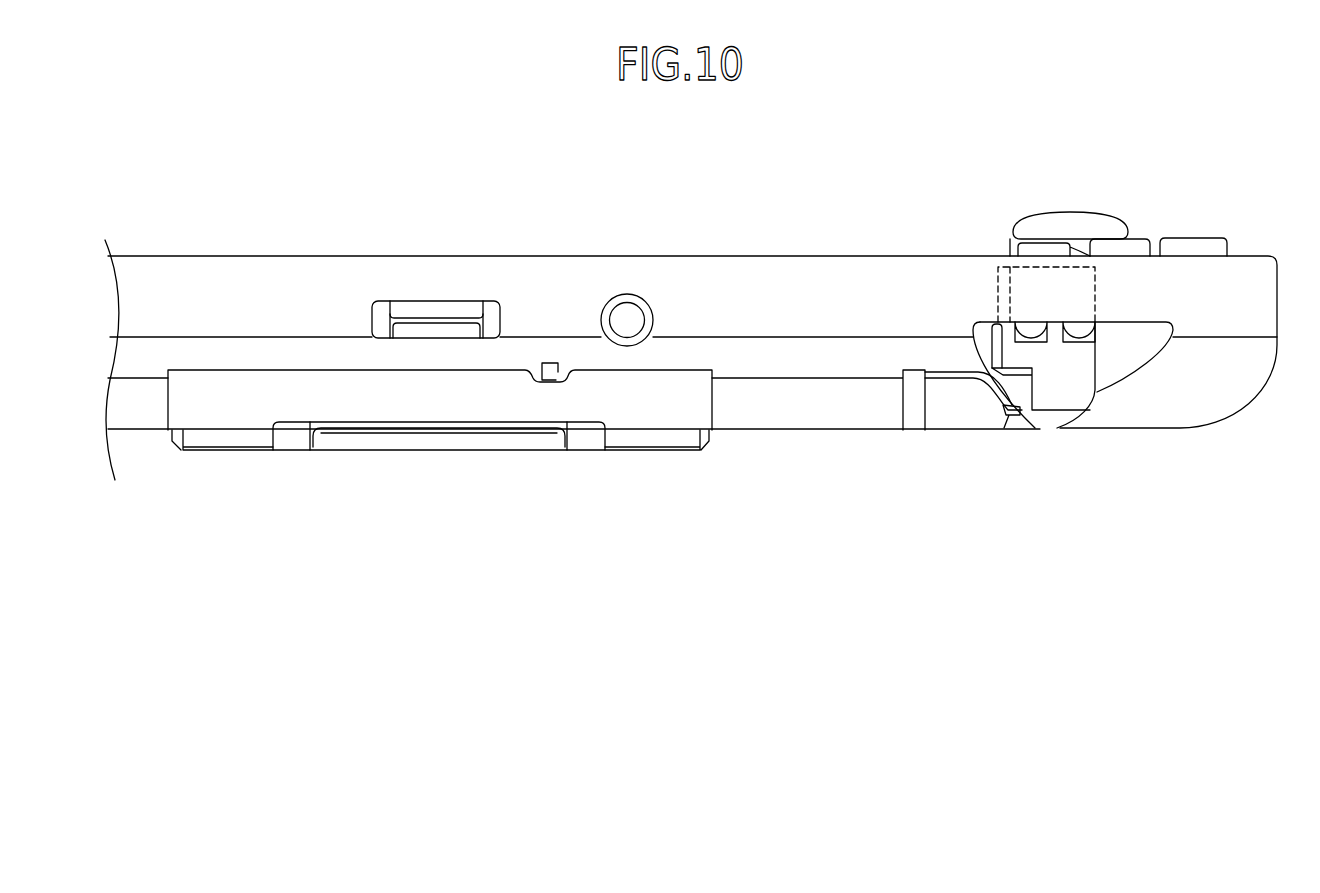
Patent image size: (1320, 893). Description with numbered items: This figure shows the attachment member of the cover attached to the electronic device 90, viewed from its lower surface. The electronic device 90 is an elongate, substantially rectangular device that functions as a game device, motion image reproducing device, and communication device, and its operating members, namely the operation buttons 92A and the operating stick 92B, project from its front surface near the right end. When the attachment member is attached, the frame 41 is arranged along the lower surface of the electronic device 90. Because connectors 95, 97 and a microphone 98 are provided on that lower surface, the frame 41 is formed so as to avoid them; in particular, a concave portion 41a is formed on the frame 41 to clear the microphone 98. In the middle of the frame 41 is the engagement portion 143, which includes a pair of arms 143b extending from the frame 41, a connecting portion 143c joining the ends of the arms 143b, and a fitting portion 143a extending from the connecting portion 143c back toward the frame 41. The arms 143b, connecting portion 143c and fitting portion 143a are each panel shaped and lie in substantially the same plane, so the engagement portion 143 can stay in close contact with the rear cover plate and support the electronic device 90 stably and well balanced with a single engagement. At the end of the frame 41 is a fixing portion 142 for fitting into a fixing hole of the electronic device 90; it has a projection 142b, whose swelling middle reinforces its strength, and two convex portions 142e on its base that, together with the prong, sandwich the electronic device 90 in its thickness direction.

The electronic device 90 is at (929, 254).
The frame 41 is at (788, 418).
The concave portion 41a is at (556, 378).
The engagement portion 143 is at (243, 460).
The fitting portion 143a is at (437, 445).
The arms 143b is at (195, 440).
The connecting portion 143c is at (372, 385).
The connector 97 is at (445, 305).
The connector 95 is at (627, 312).
The microphone 98 is at (549, 362).
The operation buttons 92A is at (1137, 238).
The operating stick 92B is at (1070, 212).
The fixing portion 142 is at (1073, 370).
The projection 142b is at (1100, 291).
The convex portion 142e is at (1030, 327).